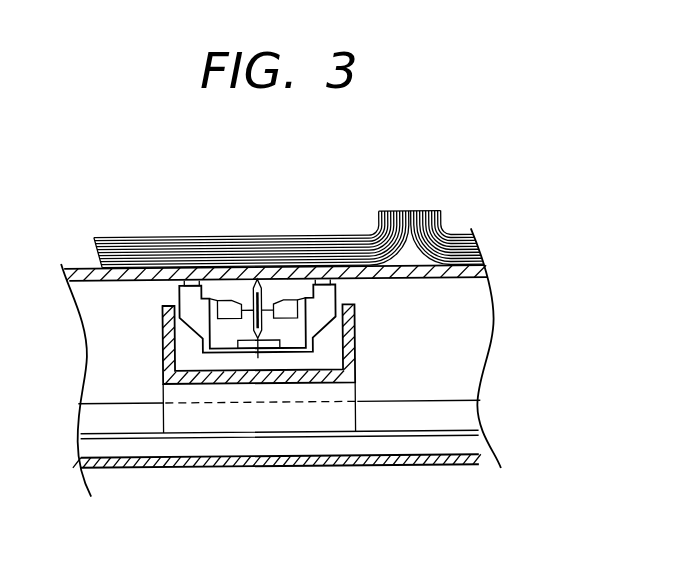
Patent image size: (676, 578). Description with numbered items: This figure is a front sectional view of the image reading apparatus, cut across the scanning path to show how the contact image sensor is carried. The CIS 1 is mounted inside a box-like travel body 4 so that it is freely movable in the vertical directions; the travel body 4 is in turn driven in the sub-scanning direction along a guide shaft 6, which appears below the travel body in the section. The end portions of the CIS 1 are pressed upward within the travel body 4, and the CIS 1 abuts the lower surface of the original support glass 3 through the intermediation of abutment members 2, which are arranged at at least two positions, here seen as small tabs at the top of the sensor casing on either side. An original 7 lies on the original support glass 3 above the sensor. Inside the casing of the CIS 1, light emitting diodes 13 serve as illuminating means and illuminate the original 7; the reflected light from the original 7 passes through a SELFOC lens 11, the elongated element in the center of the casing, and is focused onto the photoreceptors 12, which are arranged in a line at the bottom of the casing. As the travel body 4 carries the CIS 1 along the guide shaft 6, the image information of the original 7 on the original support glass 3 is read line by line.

The CIS 1 is at (231, 351).
The abutment members 2 is at (193, 281).
The original support glass 3 is at (480, 271).
The travel body 4 is at (358, 360).
The guide shaft 6 is at (467, 420).
The original 7 is at (246, 246).
The SELFOC lens 11 is at (256, 318).
The photoreceptors 12 is at (242, 340).
The light emitting diodes 13 is at (238, 298).